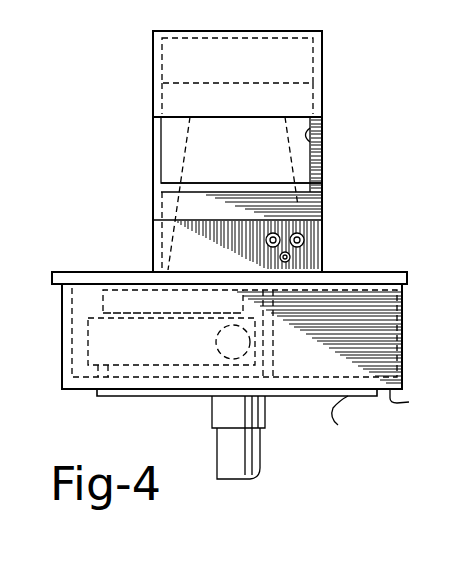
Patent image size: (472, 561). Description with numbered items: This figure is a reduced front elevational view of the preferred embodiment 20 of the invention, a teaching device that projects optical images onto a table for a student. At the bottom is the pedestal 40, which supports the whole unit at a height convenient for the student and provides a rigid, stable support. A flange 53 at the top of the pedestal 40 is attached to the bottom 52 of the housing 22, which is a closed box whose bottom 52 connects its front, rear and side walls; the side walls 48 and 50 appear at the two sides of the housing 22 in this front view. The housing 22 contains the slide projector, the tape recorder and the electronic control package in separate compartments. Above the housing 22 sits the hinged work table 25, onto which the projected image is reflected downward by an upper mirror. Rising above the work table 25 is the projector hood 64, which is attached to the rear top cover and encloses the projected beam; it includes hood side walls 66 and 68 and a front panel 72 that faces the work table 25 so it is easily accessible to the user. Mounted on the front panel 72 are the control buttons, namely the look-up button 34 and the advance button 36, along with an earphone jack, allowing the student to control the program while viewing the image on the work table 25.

The preferred embodiment 20 is at (380, 145).
The housing 22 is at (55, 378).
The work table 25 is at (387, 272).
The look-up button 34 is at (304, 239).
The advance button 36 is at (278, 235).
The pedestal 40 is at (258, 461).
The side wall 48 is at (61, 329).
The side wall 50 is at (404, 334).
The bottom 52 is at (417, 400).
The flange 53 is at (354, 419).
The projector hood 64 is at (327, 70).
The hood side wall 66 is at (160, 138).
The hood side wall 68 is at (322, 127).
The front panel 72 is at (290, 257).